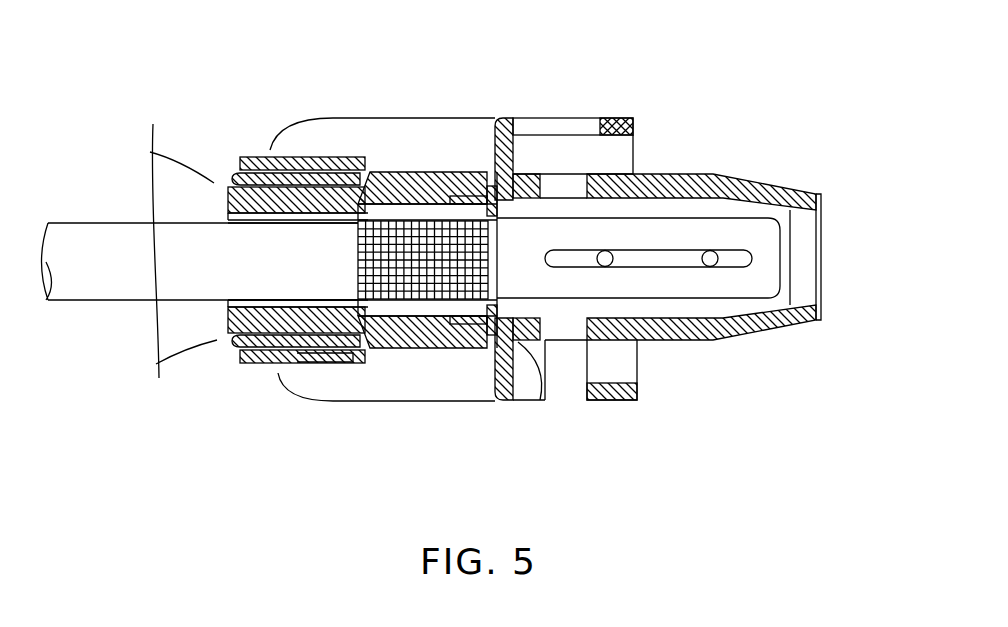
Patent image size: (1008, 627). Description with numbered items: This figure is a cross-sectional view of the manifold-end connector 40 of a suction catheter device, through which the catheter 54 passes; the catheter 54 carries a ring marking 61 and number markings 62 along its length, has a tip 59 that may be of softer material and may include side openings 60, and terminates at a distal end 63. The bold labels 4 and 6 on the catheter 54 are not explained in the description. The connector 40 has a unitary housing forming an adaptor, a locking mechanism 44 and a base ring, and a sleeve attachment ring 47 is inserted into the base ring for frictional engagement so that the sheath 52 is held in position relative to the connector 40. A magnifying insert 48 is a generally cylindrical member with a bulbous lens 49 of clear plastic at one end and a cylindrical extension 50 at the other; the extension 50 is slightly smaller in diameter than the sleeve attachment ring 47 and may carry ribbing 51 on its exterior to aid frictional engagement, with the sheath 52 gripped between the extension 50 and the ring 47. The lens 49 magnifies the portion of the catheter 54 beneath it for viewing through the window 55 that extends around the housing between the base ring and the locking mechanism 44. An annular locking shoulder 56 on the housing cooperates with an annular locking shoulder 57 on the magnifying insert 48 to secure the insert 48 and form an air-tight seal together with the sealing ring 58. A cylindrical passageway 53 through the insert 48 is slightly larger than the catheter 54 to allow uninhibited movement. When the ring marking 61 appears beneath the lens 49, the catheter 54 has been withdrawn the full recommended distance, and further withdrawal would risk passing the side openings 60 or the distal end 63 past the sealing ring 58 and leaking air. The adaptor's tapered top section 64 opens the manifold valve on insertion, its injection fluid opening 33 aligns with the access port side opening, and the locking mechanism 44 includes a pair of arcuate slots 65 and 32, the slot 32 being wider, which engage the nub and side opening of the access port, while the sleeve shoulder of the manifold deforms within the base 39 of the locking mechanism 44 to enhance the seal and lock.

The cable sheath 4 is at (293, 261).
The cable 6 is at (200, 261).
The arcuate slot 32 is at (573, 126).
The injection fluid opening 33 is at (566, 183).
The base 39 is at (538, 396).
The manifold-end connector 40 is at (819, 338).
The locking mechanism 44 is at (612, 412).
The sleeve attachment ring 47 is at (262, 165).
The magnifying insert 48 is at (365, 186).
The bulbous lens 49 is at (440, 172).
The cylindrical extension 50 is at (330, 348).
The ribbing 51 is at (270, 358).
The sheath 52 is at (234, 342).
The cylindrical passageway 53 is at (392, 312).
The catheter 54 is at (134, 300).
The window 55 is at (444, 352).
The annular locking shoulder 56 is at (458, 172).
The annular locking shoulder 57 is at (476, 340).
The sealing ring 58 is at (515, 176).
The tip 59 is at (632, 306).
The side openings 60 is at (704, 248).
The ring marking 61 is at (406, 235).
The number markings 62 is at (257, 253).
The distal end 63 is at (774, 285).
The tapered top section 64 is at (776, 182).
The arcuate slot 65 is at (561, 410).